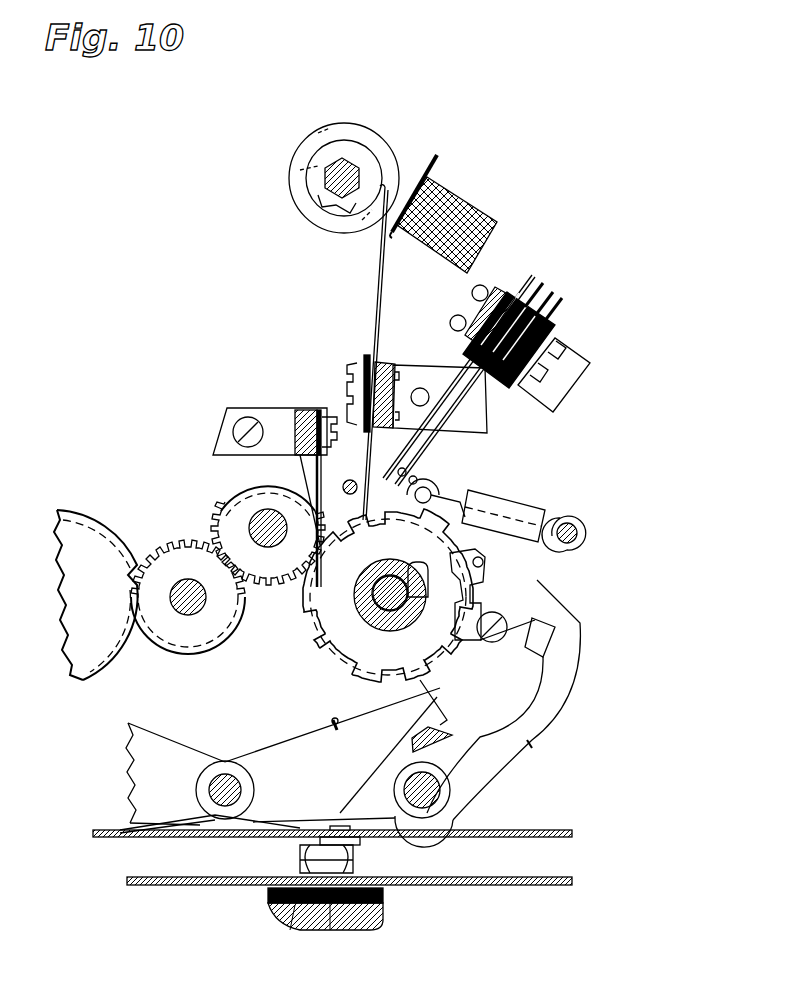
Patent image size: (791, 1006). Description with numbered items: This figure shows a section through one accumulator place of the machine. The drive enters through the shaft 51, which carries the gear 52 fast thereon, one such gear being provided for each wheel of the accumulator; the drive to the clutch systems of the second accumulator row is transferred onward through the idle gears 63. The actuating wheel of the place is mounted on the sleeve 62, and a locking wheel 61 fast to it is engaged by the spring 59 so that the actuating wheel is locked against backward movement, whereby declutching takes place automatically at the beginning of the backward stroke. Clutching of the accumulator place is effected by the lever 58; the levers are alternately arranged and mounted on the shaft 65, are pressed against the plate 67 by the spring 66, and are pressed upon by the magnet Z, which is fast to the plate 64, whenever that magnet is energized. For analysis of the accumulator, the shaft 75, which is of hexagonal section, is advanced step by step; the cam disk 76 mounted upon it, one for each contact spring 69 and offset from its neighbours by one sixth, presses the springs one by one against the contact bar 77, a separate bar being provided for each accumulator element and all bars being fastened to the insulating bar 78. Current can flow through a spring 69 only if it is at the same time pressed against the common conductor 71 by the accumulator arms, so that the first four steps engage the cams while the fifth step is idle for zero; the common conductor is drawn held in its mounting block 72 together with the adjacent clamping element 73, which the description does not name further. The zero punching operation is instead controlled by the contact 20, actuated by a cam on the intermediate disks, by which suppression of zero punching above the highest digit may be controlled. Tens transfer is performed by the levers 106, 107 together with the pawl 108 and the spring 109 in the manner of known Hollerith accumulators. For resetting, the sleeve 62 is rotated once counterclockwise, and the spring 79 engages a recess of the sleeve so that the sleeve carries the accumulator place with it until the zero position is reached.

The shaft 75 is at (338, 170).
The cam disk 76 is at (345, 152).
The contact bar 77 is at (435, 158).
The insulating bar 78 is at (485, 217).
The contact spring 69 is at (373, 302).
The toothed clamp piece 73 is at (365, 367).
The clamp block 72 is at (387, 363).
The common conductor 71 is at (348, 482).
The spring 59 is at (288, 430).
The shaft 51 is at (262, 527).
The gear 52 is at (247, 500).
The idle gear 63 is at (172, 568).
The locking wheel 61 is at (325, 600).
The spring 79 is at (415, 567).
The zero contact 20 is at (437, 472).
The spring 109 is at (545, 512).
The pawl 108 is at (488, 578).
The lever 107 is at (533, 638).
The lever 106 is at (543, 657).
The sleeve 62 is at (407, 623).
The shaft 65 is at (225, 782).
The lever 58 is at (263, 807).
The spring 66 is at (153, 823).
The plate 67 is at (108, 835).
The plate 64 is at (475, 877).
The magnet Z is at (360, 907).